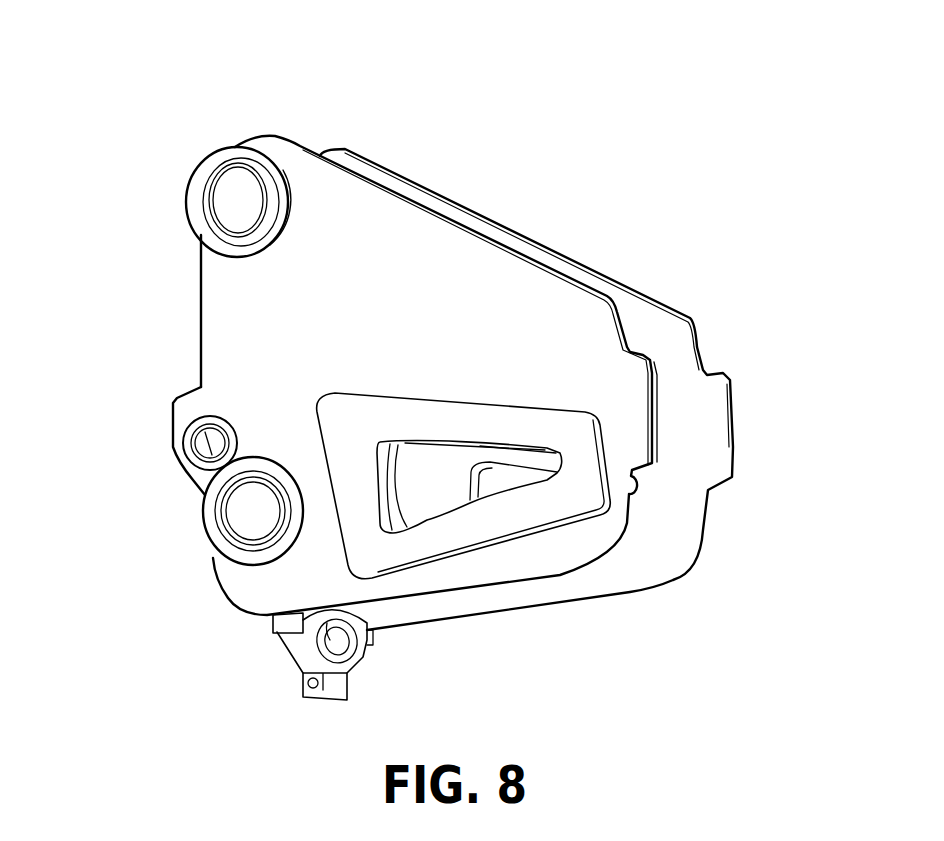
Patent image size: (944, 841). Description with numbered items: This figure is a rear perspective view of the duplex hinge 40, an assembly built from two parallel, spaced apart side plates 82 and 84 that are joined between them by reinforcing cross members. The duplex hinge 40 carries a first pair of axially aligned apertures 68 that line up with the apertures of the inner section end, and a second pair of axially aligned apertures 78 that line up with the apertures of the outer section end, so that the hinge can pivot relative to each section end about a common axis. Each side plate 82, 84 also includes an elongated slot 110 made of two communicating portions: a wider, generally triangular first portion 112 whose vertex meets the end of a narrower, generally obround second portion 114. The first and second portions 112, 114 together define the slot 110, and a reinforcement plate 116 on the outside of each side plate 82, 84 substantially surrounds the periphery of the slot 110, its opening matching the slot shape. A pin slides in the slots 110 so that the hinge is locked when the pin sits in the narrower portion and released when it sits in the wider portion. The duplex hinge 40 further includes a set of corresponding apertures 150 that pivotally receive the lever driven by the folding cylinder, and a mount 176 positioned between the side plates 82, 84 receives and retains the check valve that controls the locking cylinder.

The duplex hinge 40 is at (452, 128).
The first pair of apertures 68 is at (232, 192).
The second pair of apertures 78 is at (248, 517).
The side plate 82 is at (242, 305).
The side plate 84 is at (690, 418).
The elongated slot 110 is at (443, 490).
The first portion 112 is at (413, 470).
The second portion 114 is at (547, 460).
The reinforcement plate 116 is at (503, 522).
The apertures 150 is at (213, 445).
The mount 176 is at (297, 650).